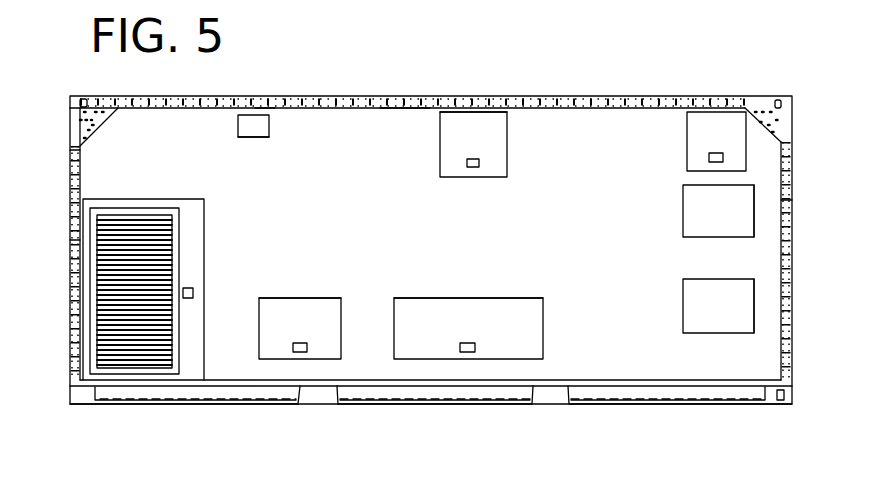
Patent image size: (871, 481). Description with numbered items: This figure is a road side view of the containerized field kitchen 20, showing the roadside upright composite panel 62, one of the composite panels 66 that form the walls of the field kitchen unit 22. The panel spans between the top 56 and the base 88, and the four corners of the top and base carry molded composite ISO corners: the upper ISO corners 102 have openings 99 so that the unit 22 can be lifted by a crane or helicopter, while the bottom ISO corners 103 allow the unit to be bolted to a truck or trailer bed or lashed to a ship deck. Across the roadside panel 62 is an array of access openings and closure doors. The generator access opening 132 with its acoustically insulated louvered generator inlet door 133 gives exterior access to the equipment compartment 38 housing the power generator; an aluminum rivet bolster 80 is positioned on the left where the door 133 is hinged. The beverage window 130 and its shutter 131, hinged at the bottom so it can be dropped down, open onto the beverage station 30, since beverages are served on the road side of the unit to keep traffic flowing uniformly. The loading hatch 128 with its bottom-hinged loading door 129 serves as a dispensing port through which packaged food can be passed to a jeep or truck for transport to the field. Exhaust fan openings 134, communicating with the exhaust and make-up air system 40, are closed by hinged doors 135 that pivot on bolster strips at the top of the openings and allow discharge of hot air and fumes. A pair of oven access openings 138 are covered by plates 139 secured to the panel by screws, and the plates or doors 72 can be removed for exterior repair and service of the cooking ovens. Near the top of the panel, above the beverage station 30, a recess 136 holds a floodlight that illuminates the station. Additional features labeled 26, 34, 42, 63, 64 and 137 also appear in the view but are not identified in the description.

The containerized field kitchen 20 is at (793, 97).
The field kitchen unit 22 is at (70, 317).
The right side wall 26 is at (747, 353).
The beverage station 30 is at (259, 337).
The equipment cabinet 34 is at (683, 279).
The equipment compartment 38 is at (204, 285).
The exhaust and make-up air system 40 is at (440, 146).
The junction box 42 is at (265, 137).
The top 56 is at (668, 94).
The roadside upright composite panel 62 is at (402, 123).
The wall panel 63 is at (70, 170).
The wall panel 64 is at (793, 200).
The composite panels 66 is at (758, 168).
The plates or doors 72 is at (705, 202).
The aluminum rivet bolster 80 is at (80, 247).
The base 88 is at (420, 405).
The openings 99 is at (72, 105).
The top ISO corners 102 is at (105, 105).
The bottom ISO corners 103 is at (792, 392).
The loading hatch 128 is at (543, 332).
The loading door 129 is at (514, 322).
The beverage window 130 is at (299, 298).
The shutter 131 is at (326, 343).
The generator access opening 132 is at (160, 199).
The louvered generator inlet door 133 is at (160, 238).
The exhaust fan openings 134 is at (505, 177).
The doors 135 is at (488, 136).
The recessed floodlight opening 136 is at (270, 110).
The junction box 137 is at (249, 123).
The oven access openings 138 is at (754, 236).
The plates 139 is at (738, 309).